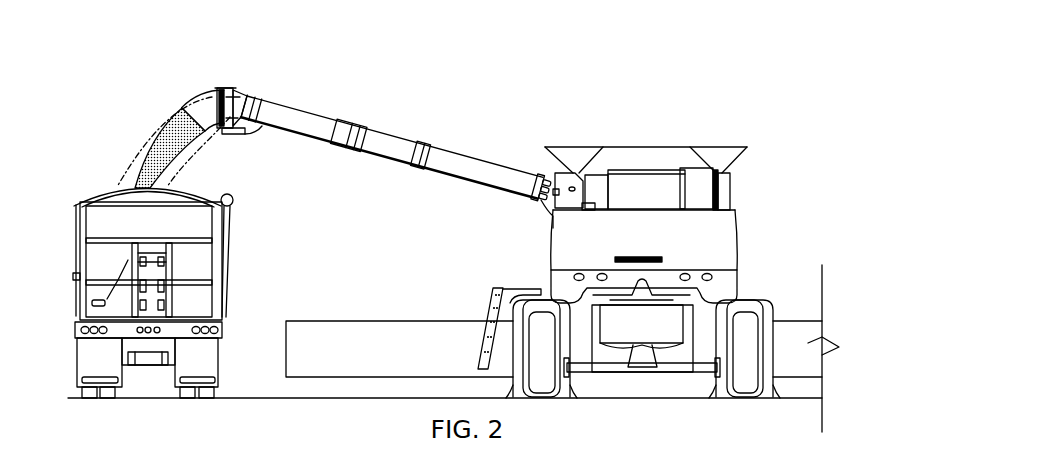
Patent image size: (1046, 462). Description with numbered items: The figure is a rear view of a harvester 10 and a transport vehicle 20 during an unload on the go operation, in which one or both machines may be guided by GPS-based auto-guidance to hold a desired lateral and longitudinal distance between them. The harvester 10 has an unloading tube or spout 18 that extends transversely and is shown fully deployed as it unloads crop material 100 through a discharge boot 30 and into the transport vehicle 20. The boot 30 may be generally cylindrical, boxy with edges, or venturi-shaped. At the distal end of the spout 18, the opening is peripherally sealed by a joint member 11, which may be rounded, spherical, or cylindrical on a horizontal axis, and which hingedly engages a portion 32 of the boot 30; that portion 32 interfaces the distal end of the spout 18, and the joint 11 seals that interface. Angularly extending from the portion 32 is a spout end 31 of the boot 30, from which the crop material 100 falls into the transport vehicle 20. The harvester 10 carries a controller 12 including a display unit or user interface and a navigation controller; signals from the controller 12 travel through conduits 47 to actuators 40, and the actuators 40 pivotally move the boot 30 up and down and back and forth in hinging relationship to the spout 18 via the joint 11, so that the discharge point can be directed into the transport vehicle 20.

The harvester 10 is at (757, 118).
The controller 12 is at (666, 191).
The unloading tube or spout 18 is at (390, 168).
The transport vehicle 20 is at (227, 252).
The discharge boot 30 is at (198, 84).
The spout end 31 is at (188, 98).
The portion of the boot 32 is at (214, 89).
The joint member 11 is at (235, 86).
The actuators 40 is at (259, 99).
The conduits 47 is at (305, 143).
The crop material 100 is at (147, 152).